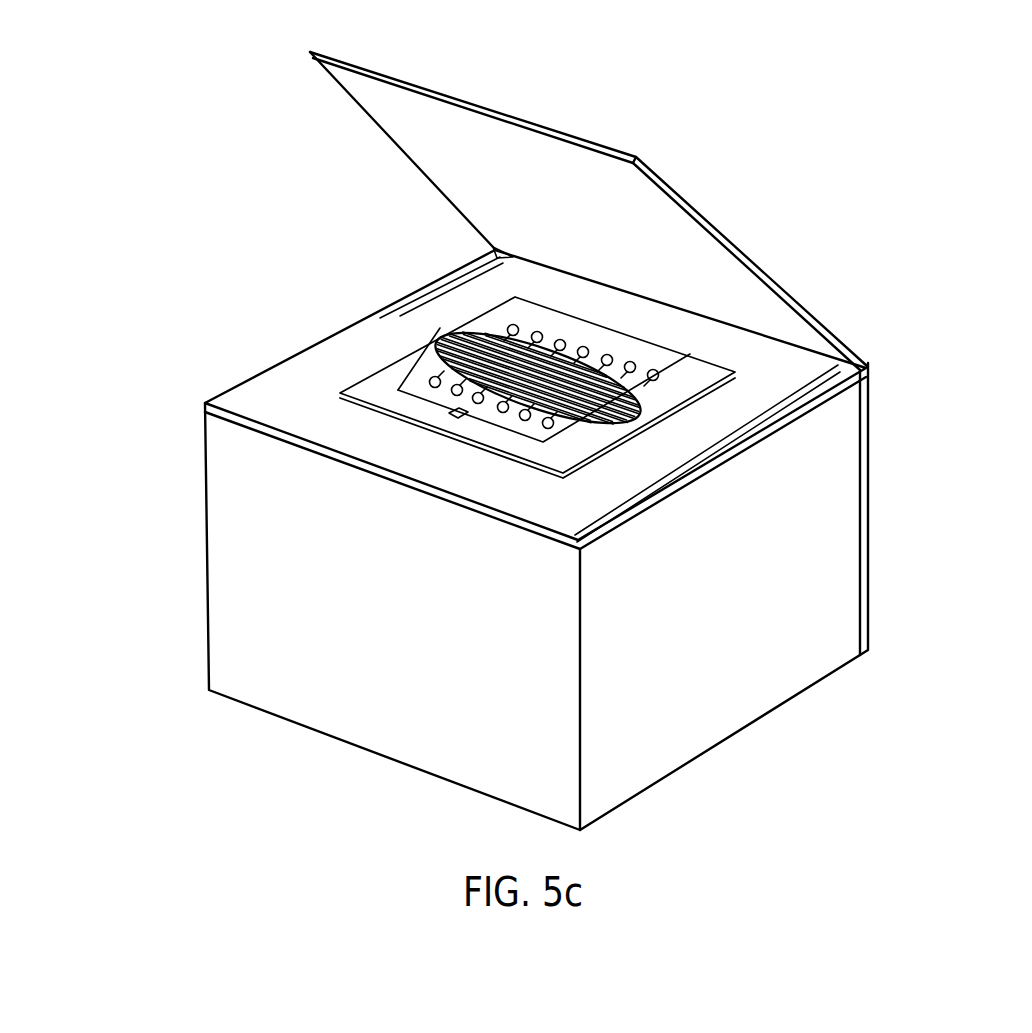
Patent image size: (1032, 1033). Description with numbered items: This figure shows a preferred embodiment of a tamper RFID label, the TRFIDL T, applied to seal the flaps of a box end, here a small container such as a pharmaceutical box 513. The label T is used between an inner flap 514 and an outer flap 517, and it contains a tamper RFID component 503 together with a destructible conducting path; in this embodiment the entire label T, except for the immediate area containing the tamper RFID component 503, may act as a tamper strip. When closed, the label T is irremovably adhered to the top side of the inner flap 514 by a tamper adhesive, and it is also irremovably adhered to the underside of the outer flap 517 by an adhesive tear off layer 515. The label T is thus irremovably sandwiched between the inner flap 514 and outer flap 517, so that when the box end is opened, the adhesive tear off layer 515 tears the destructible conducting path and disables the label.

The tamper RFID component 503 is at (460, 418).
The pharmaceutical box 513 is at (427, 725).
The inner flap 514 is at (716, 402).
The adhesive tear off layer 515 is at (478, 352).
The outer flap 517 is at (498, 138).
The tamper RFID label T is at (377, 387).